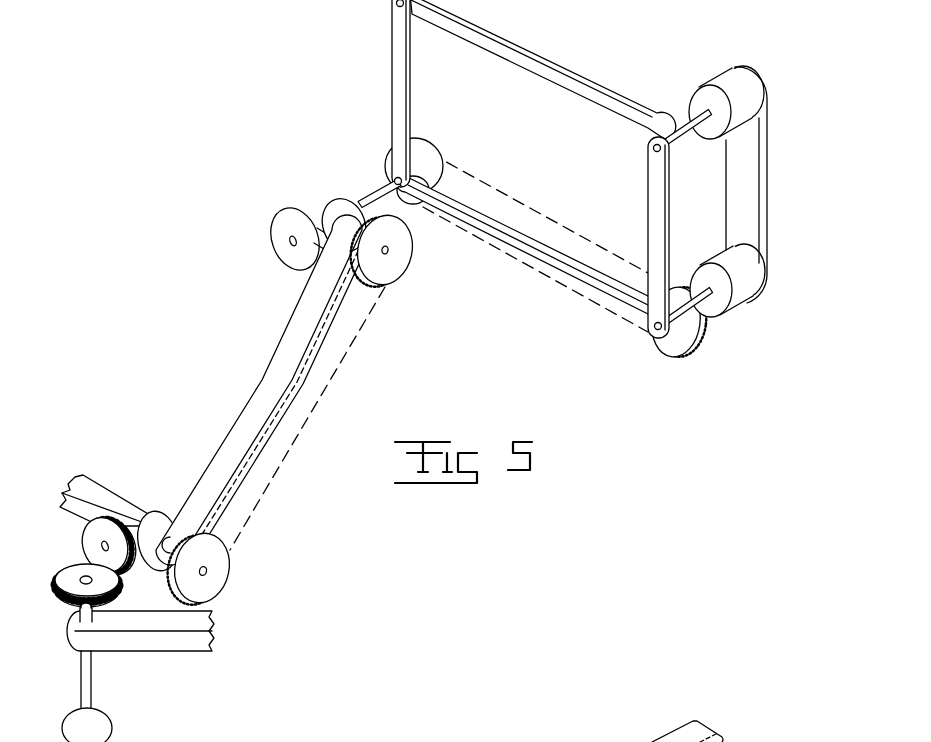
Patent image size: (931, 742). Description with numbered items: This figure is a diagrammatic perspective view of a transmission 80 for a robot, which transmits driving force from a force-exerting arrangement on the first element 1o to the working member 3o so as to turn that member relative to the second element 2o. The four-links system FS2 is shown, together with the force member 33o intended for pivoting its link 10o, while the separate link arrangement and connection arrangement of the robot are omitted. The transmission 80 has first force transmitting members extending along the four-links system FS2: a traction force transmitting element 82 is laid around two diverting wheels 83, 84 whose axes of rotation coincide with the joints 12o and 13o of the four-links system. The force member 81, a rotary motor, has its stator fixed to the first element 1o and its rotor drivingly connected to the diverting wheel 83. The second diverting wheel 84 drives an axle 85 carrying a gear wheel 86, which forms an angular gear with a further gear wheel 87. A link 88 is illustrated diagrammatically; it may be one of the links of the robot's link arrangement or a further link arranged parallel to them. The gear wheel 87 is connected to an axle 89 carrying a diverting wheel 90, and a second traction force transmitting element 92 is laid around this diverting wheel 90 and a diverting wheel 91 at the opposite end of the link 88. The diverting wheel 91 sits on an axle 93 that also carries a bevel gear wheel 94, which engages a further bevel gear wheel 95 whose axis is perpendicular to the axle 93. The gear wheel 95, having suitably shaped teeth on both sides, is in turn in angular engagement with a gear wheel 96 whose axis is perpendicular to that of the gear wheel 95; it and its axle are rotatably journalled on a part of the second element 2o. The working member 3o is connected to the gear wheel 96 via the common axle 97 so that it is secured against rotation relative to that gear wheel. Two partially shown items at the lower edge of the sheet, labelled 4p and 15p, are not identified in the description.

The four-links system FS2 is at (604, 76).
The link 10o is at (515, 60).
The force member 33o is at (727, 87).
The first element 1o is at (750, 200).
The force member 81 is at (740, 293).
The traction force transmitting element 82 is at (550, 217).
The diverting wheel 83 is at (680, 343).
The diverting wheel 84 is at (418, 152).
The axle 85 is at (403, 190).
The joint 12o is at (650, 323).
The joint 13o is at (393, 180).
The transmission 80 is at (213, 206).
The gear wheel 86 is at (287, 257).
The gear wheel 87 is at (342, 203).
The link 88 is at (283, 347).
The axle 89 is at (390, 252).
The diverting wheel 90 is at (373, 270).
The second traction force transmitting element 92 is at (292, 452).
The diverting wheel 91 is at (218, 555).
The axle 93 is at (205, 572).
The bevel gear wheel 94 is at (162, 530).
The bevel gear wheel 95 is at (108, 540).
The gear wheel 96 is at (70, 573).
The common axle 97 is at (88, 667).
The second element 2o is at (90, 490).
The working member 3o is at (108, 697).
The support member 4p is at (636, 741).
The support member 15p is at (798, 741).